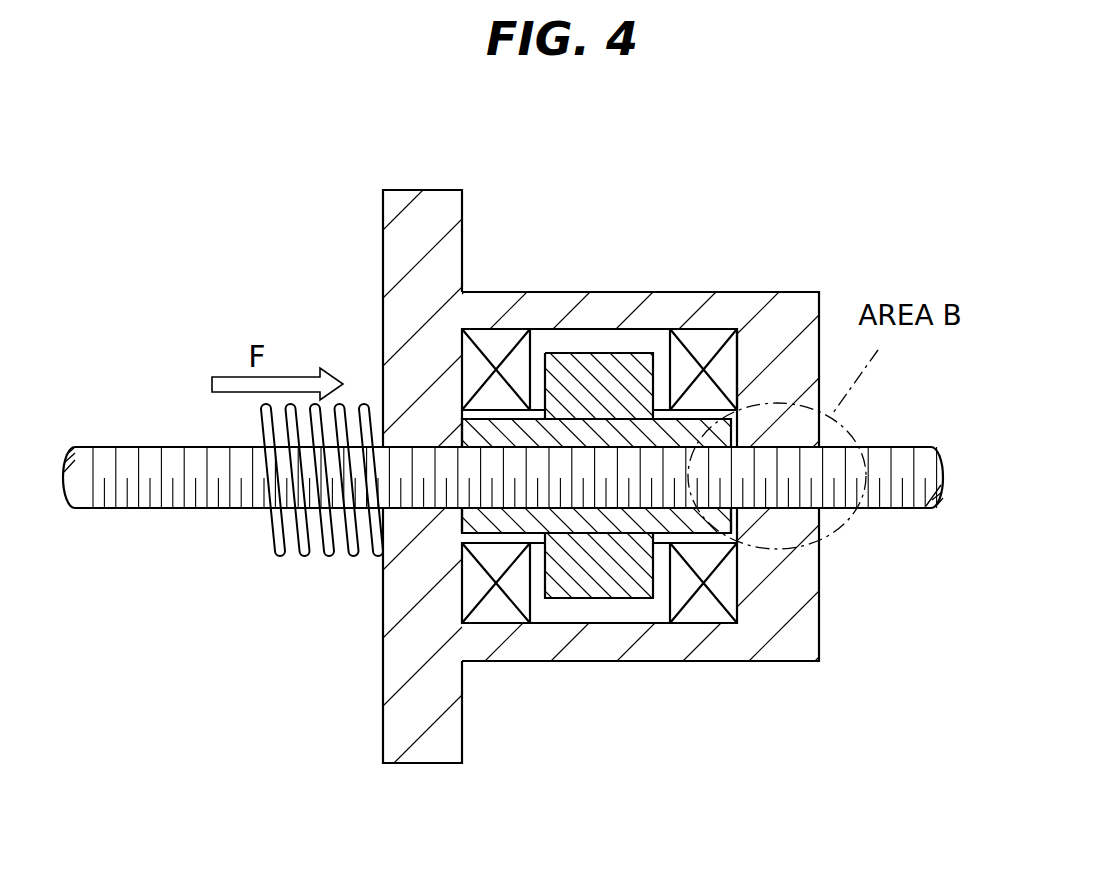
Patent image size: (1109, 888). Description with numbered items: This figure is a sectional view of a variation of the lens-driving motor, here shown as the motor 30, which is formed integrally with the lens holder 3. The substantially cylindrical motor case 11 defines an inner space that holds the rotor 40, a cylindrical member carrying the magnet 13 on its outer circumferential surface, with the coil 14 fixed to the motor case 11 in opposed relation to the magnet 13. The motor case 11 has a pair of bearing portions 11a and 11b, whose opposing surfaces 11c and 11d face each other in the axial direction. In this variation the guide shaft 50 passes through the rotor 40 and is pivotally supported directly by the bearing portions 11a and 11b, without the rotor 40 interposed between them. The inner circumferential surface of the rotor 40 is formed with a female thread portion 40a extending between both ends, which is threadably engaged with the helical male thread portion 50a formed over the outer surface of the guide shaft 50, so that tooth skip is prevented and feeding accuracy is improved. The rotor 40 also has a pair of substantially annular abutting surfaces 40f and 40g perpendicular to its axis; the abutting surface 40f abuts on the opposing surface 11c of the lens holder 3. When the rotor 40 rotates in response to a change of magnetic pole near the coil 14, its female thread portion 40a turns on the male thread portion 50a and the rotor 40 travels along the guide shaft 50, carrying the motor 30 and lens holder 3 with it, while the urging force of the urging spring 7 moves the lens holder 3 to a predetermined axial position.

The lens holder 3 is at (382, 232).
The urging spring 7 is at (263, 536).
The motor case 11 is at (663, 291).
The bearing portion 11a is at (412, 445).
The bearing portion 11b is at (770, 450).
The opposing surface 11c is at (470, 428).
The opposing surface 11d is at (725, 440).
The magnet 13 is at (641, 600).
The coil 14 is at (497, 608).
The motor 30 is at (820, 291).
The rotor 40 is at (568, 525).
The female thread portion 40a is at (653, 447).
The abutting surface 40f is at (463, 527).
The abutting surface 40g is at (731, 510).
The guide shaft 50 is at (917, 510).
The male thread portion 50a is at (902, 447).